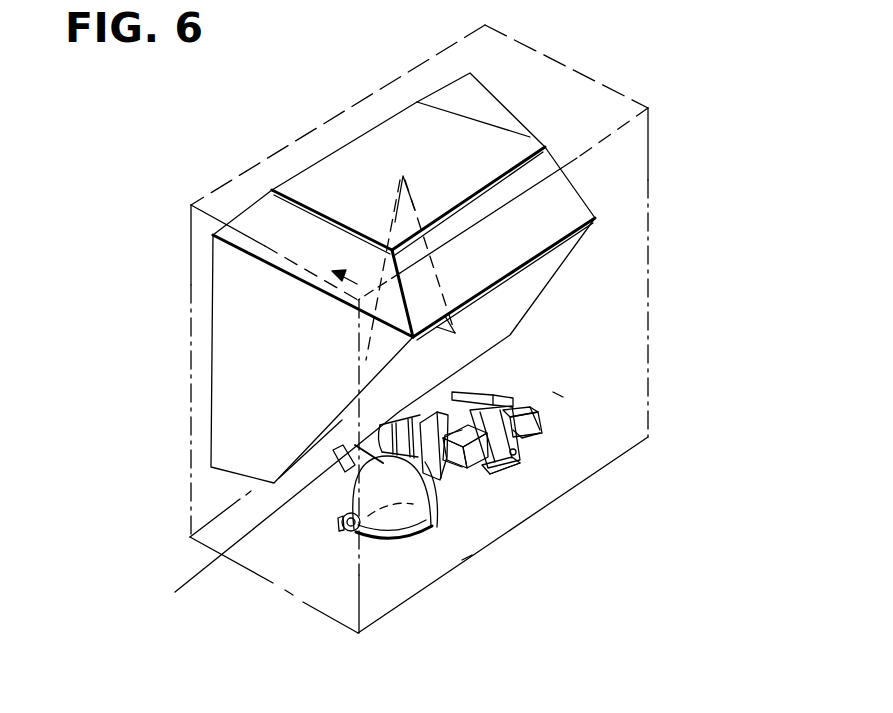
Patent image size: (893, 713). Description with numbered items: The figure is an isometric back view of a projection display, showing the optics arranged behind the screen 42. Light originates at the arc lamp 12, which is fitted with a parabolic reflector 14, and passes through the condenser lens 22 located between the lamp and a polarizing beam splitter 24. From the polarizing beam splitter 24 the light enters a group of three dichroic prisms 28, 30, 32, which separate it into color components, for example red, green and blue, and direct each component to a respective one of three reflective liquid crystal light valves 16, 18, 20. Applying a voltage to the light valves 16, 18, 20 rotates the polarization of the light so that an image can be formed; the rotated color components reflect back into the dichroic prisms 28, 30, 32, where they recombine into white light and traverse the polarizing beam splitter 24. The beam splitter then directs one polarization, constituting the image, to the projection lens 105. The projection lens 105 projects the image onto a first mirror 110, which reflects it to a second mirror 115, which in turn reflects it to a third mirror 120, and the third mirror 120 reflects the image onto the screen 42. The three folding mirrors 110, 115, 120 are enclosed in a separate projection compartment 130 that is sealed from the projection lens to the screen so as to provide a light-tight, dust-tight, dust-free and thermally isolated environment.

The arc lamp 12 is at (345, 527).
The parabolic reflector 14 is at (400, 533).
The reflective liquid crystal light valve 16 is at (487, 472).
The reflective liquid crystal light valve 18 is at (530, 427).
The reflective liquid crystal light valve 20 is at (475, 391).
The condenser lens 22 is at (435, 500).
The polarizing beam splitter 24 is at (518, 465).
The dichroic prism 28 is at (510, 457).
The dichroic prism 30 is at (517, 433).
The dichroic prism 32 is at (537, 432).
The screen 42 is at (235, 217).
The projection lens 105 is at (385, 424).
The first mirror 110 is at (366, 417).
The second mirror 115 is at (353, 160).
The third mirror 120 is at (552, 263).
The projection compartment 130 is at (230, 348).